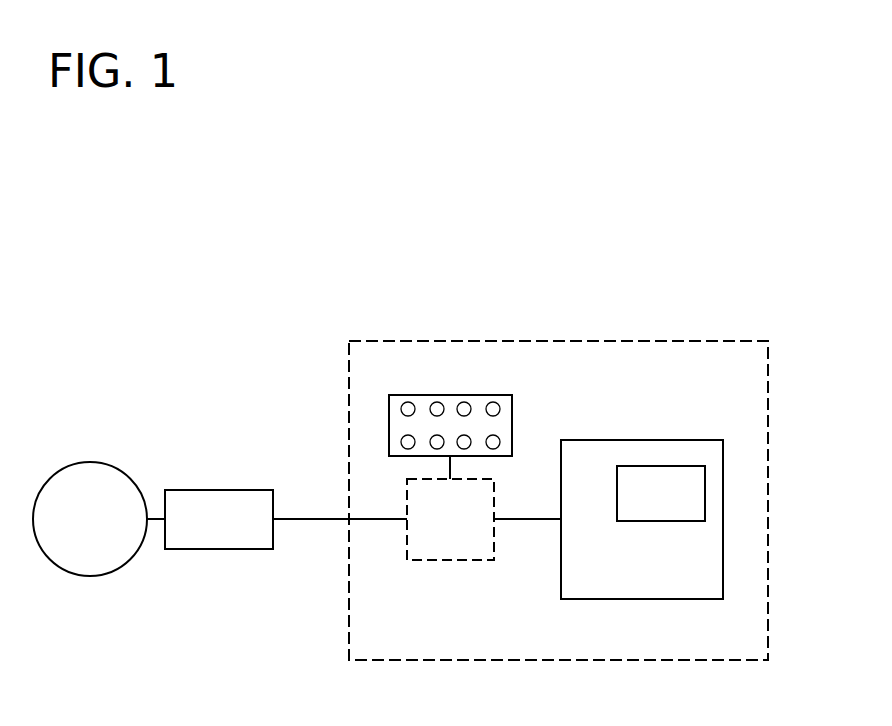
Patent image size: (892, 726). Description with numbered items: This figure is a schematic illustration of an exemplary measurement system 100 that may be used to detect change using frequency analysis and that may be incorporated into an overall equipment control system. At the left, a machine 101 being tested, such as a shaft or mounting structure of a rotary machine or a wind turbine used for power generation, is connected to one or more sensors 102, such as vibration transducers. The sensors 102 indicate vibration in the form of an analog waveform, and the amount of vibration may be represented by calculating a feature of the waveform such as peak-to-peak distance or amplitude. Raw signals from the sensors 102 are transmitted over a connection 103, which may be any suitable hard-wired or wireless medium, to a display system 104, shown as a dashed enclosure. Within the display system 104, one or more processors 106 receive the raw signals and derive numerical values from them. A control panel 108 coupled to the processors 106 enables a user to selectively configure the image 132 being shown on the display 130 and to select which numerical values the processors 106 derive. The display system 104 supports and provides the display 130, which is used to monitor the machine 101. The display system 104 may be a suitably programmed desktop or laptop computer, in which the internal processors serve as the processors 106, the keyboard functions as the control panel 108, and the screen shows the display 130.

The measurement system 100 is at (307, 317).
The machine 101 is at (90, 462).
The sensor 102 is at (248, 490).
The connection 103 is at (302, 518).
The display system 104 is at (550, 341).
The processor 106 is at (422, 562).
The control panel 108 is at (403, 395).
The display 130 is at (700, 440).
The image 132 is at (705, 484).